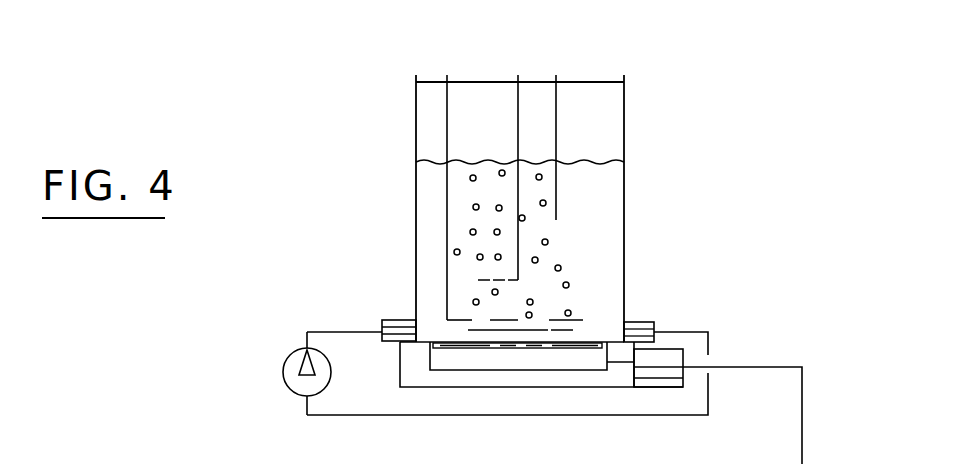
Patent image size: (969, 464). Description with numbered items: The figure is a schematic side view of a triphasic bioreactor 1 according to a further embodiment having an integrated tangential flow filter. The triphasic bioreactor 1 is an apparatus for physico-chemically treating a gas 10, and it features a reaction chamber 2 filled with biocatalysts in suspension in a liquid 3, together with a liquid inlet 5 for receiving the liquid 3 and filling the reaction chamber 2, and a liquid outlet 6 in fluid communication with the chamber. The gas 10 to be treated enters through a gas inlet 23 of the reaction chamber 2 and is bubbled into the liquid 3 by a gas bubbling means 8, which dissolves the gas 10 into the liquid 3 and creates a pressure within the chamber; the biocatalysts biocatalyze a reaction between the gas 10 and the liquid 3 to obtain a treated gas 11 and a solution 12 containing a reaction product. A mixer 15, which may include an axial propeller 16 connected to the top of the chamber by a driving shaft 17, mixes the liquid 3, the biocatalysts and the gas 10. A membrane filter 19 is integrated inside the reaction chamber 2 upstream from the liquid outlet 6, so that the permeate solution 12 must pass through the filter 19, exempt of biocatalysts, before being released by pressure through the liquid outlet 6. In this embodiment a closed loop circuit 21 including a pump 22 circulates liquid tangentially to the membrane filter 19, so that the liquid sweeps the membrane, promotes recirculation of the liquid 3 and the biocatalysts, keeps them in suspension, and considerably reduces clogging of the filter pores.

The triphasic bioreactor 1 is at (306, 72).
The reaction chamber 2 is at (632, 122).
The liquid 3 is at (593, 180).
The liquid inlet 5 is at (556, 80).
The liquid outlet 6 is at (750, 367).
The gas bubbling means 8 is at (436, 268).
The gas 10 is at (472, 178).
The treated gas 11 is at (472, 124).
The solution containing a reaction product 12 is at (582, 362).
The mixer 15 is at (530, 250).
The axial propeller 16 is at (546, 276).
The driving shaft 17 is at (518, 232).
The membrane filter 19 is at (565, 347).
The closed loop circuit 21 is at (307, 398).
The pump 22 is at (295, 360).
The gas inlet 23 is at (447, 75).